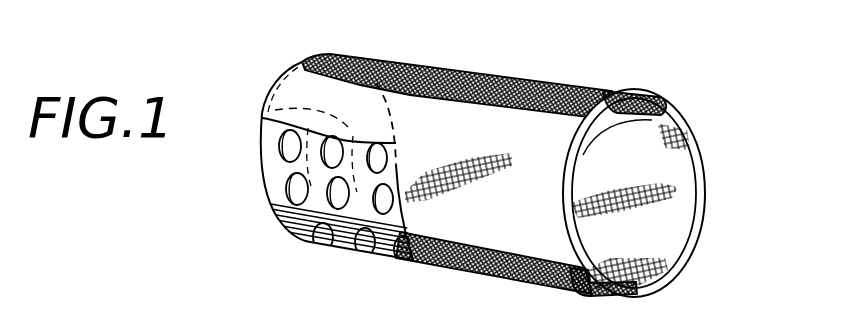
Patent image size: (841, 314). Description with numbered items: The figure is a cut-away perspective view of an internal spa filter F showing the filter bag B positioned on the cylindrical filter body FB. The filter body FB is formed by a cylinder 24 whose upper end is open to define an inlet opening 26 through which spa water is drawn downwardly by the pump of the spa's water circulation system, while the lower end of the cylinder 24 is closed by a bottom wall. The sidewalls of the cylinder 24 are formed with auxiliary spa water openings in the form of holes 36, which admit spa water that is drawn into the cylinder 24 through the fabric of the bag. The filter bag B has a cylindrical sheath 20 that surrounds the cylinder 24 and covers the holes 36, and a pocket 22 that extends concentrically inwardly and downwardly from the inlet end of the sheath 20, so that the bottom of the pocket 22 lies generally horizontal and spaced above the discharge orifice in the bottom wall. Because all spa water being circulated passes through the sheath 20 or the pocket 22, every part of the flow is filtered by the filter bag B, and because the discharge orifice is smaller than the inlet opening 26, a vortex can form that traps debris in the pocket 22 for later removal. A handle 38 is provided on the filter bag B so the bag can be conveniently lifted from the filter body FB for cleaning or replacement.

The cylindrical sheath 20 is at (407, 63).
The internal spa filter F is at (502, 80).
The inlet opening 26 is at (297, 81).
The holes 36 is at (290, 148).
The cylindrical filter body FB is at (284, 204).
The cylinder 24 is at (367, 222).
The filter bag B is at (458, 187).
The pocket 22 is at (670, 193).
The handle 38 is at (604, 262).